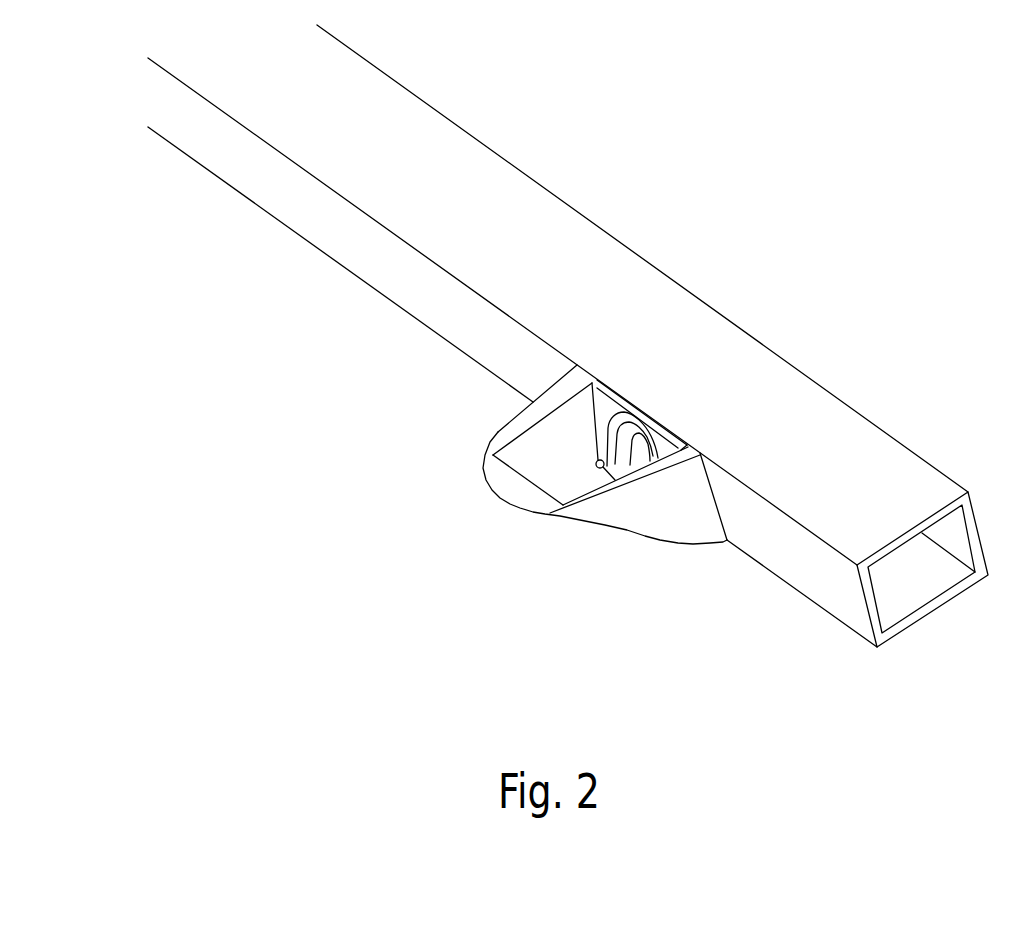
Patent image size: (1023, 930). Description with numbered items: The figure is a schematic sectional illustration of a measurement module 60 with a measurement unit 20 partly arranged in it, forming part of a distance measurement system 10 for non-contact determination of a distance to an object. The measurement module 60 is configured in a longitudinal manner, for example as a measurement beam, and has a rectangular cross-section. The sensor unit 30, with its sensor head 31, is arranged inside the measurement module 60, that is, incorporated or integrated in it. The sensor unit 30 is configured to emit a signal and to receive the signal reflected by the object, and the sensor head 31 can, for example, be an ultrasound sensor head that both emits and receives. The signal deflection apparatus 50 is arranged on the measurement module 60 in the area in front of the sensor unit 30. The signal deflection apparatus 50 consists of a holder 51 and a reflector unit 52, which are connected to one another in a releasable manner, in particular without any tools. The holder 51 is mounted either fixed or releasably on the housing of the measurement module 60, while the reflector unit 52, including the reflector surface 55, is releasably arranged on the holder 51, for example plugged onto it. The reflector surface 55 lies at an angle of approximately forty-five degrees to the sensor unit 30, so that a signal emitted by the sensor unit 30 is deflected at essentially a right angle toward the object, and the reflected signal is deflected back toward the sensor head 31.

The distance measurement system 10 is at (936, 120).
The measurement unit 20 is at (397, 394).
The sensor unit 30 is at (643, 387).
The sensor head 31 is at (632, 439).
The signal deflection apparatus 50 is at (565, 545).
The holder 51 is at (598, 411).
The reflector unit 52 is at (645, 513).
The reflector surface 55 is at (562, 473).
The measurement module 60 is at (848, 453).